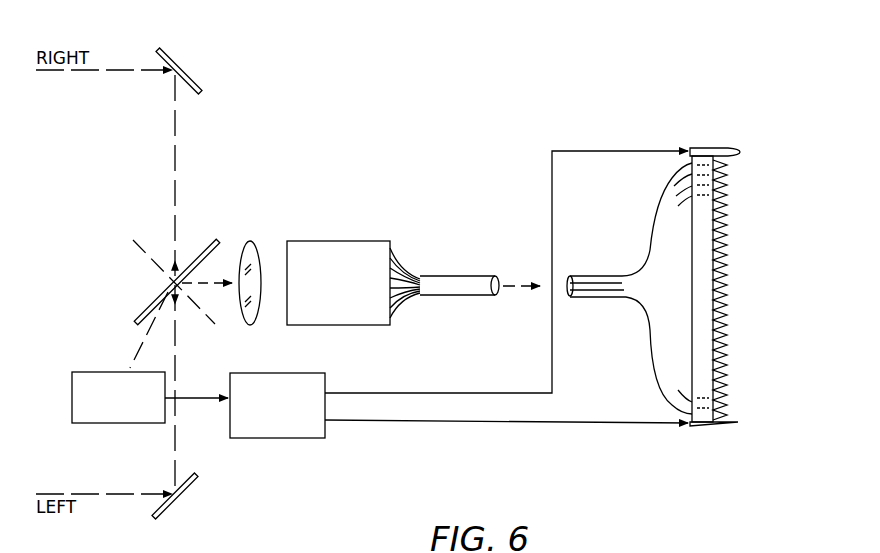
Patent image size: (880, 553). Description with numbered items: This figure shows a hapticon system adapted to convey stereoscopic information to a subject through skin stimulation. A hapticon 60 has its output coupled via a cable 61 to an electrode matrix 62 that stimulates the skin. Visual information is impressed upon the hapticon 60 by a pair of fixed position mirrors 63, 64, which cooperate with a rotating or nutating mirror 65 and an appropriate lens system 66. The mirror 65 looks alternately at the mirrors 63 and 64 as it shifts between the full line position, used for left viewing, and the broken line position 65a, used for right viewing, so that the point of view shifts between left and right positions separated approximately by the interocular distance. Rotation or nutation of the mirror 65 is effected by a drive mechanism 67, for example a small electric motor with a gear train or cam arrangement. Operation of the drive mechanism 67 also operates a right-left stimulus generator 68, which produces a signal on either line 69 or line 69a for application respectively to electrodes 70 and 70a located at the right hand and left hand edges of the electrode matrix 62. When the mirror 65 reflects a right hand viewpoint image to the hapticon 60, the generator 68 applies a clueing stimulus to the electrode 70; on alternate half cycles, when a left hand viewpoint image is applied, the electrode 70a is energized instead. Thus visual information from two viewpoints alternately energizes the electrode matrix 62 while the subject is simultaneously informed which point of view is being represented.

The hapticon 60 is at (335, 253).
The cable 61 is at (455, 286).
The electrode matrix 62 is at (720, 262).
The fixed position mirror 63 is at (187, 74).
The fixed position mirror 64 is at (185, 498).
The rotating or nutating mirror 65 is at (197, 255).
The broken line position 65a is at (138, 250).
The lens system 66 is at (253, 253).
The drive mechanism 67 is at (135, 423).
The right-left stimulus generator 68 is at (300, 438).
The line 69 is at (440, 393).
The line 69a is at (425, 420).
The electrode 70 is at (692, 148).
The electrode 70a is at (690, 426).